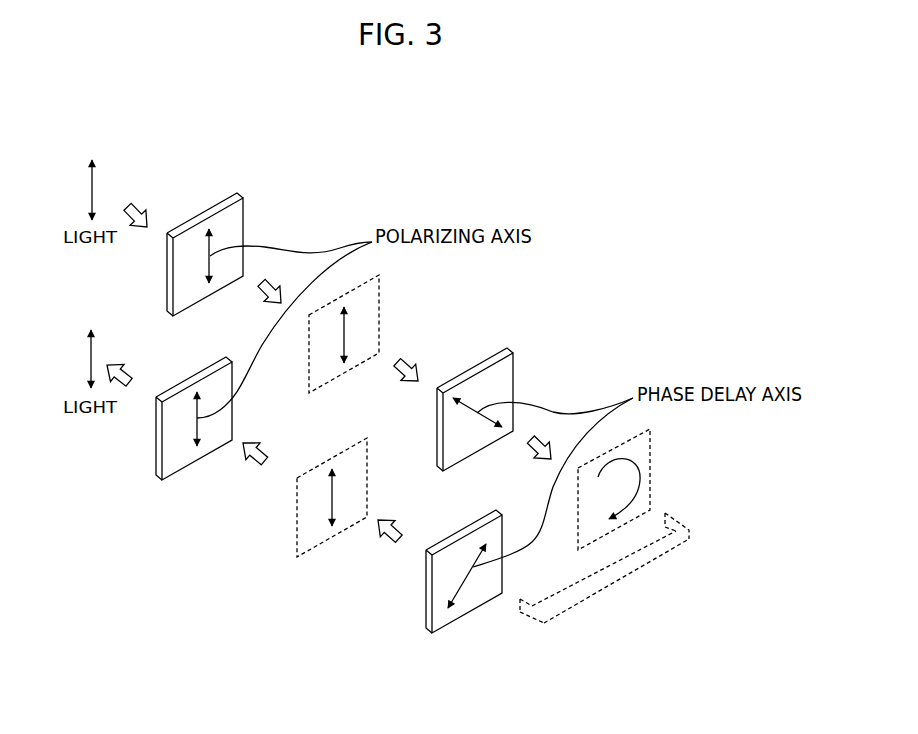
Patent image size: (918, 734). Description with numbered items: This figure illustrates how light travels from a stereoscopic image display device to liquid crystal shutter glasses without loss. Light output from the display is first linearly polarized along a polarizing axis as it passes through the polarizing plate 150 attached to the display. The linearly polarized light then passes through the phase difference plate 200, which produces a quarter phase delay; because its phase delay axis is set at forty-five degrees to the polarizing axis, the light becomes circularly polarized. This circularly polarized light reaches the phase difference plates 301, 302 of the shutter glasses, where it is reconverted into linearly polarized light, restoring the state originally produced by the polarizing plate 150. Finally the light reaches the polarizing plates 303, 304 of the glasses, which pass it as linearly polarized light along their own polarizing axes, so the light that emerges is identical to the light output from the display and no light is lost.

The polarizing plate 150 is at (225, 210).
The phase difference plate 200 is at (487, 366).
The phase difference plate 301 is at (403, 582).
The phase difference plate 302 is at (428, 618).
The polarizing plate 303 is at (136, 428).
The polarizing plate 304 is at (160, 464).